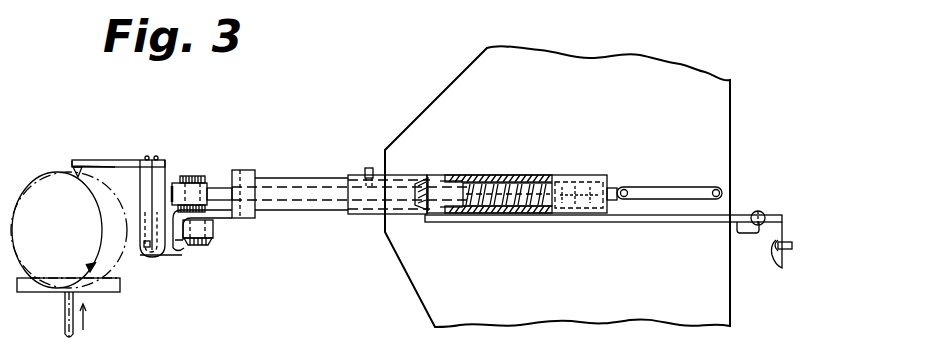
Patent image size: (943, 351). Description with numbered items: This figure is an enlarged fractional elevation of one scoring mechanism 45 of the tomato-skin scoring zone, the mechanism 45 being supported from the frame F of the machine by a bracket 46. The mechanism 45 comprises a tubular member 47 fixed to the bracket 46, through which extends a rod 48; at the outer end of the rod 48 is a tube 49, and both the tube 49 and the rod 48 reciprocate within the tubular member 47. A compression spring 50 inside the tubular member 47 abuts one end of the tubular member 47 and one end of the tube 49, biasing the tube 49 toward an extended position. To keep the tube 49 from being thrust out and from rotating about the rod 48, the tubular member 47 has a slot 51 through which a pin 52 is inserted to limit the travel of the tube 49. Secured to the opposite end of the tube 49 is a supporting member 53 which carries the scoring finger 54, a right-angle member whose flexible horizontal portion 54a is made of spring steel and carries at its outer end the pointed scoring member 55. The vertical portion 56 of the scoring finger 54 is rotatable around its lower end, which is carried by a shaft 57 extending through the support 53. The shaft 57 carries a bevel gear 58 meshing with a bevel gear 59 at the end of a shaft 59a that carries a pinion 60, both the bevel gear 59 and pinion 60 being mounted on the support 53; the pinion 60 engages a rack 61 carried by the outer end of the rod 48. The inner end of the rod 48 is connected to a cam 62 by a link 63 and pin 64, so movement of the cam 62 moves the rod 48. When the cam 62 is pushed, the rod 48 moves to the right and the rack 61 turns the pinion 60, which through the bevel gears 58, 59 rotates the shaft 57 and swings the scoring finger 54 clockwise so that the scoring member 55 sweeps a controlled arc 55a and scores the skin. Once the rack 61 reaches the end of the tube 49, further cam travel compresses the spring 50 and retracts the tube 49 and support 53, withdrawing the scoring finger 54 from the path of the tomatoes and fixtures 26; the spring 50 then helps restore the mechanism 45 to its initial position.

The fixture 26 is at (51, 330).
The scoring mechanism 45 is at (389, 124).
The bracket 46 is at (675, 219).
The tubular member 47 is at (395, 215).
The rod 48 is at (213, 190).
The tube 49 is at (298, 181).
The compression spring 50 is at (501, 184).
The slot 51 is at (445, 177).
The pin 52 is at (369, 168).
The supporting member 53 is at (248, 215).
The scoring finger 54 is at (133, 165).
The flexible portion 54a is at (88, 164).
The scoring member 55 is at (76, 172).
The controlled arc 55a is at (98, 222).
The vertical portion 56 is at (148, 187).
The shaft 57 is at (150, 253).
The bevel gear 58 is at (185, 245).
The bevel gear 59 is at (213, 242).
The shaft 59a is at (200, 221).
The pinion 60 is at (190, 180).
The rack 61 is at (172, 184).
The cam 62 is at (705, 115).
The link 63 is at (650, 178).
The pin 64 is at (713, 189).
The frame F is at (776, 258).